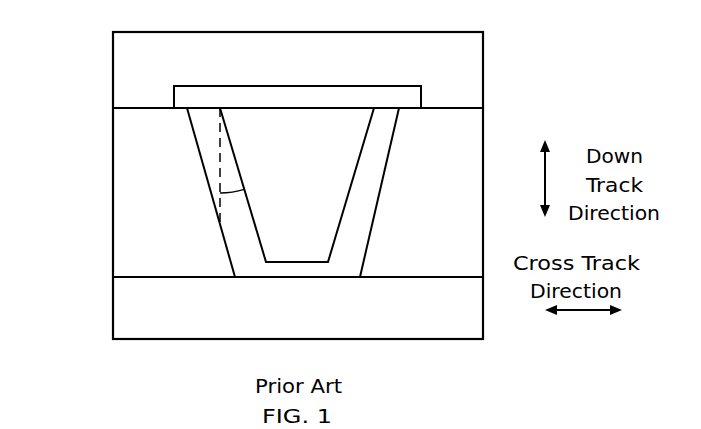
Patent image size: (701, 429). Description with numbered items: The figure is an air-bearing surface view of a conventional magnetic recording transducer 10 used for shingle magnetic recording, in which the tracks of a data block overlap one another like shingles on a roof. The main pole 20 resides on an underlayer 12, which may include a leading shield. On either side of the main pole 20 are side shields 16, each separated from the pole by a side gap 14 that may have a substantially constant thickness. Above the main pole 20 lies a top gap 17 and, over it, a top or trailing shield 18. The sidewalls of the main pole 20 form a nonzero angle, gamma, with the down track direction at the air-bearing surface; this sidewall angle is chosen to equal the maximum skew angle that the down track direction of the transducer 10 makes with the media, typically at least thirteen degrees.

The magnetic recording transducer 10 is at (97, 26).
The underlayer 12 is at (298, 299).
The side gap 14 is at (372, 232).
The side shields 16 is at (298, 192).
The top gap 17 is at (175, 93).
The top shield 18 is at (298, 80).
The main pole 20 is at (297, 185).